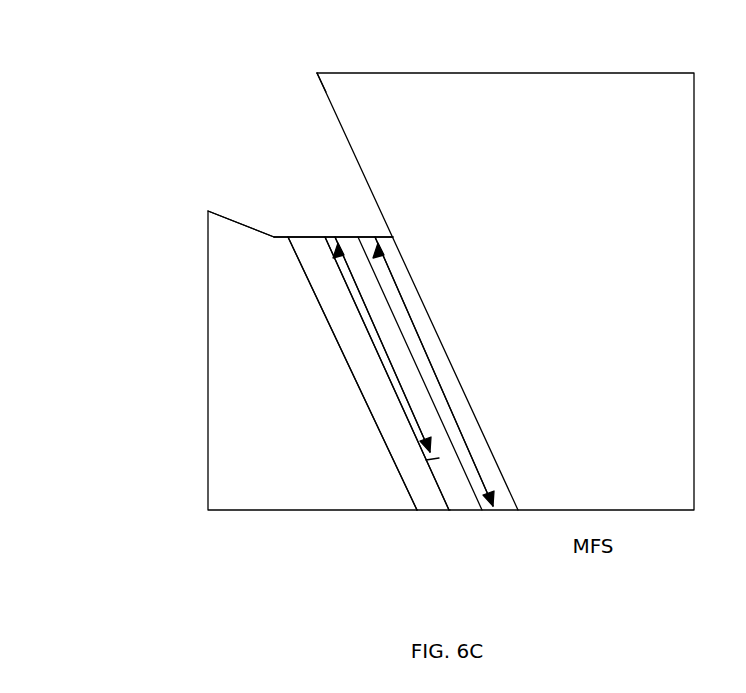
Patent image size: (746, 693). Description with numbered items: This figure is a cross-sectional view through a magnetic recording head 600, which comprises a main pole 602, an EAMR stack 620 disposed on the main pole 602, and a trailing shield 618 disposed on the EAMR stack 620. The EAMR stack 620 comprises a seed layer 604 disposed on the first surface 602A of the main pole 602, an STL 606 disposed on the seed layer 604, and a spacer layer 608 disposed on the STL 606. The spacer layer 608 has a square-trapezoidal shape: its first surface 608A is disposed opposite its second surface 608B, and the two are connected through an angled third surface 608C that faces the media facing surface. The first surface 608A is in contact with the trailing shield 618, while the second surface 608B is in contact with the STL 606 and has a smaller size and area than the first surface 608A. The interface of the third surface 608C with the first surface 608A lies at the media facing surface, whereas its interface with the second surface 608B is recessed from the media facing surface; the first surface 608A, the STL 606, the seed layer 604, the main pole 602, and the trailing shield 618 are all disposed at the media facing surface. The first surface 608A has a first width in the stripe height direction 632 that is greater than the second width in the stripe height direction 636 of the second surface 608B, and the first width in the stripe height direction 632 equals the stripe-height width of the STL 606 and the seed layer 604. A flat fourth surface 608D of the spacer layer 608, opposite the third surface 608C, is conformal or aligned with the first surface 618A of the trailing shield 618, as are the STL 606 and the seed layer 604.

The magnetic recording head 600 is at (122, 130).
The main pole 602 is at (564, 144).
The first surface of the main pole 602A is at (325, 91).
The seed layer 604 is at (405, 293).
The STL 606 is at (352, 257).
The spacer layer 608 is at (312, 270).
The first surface of the spacer layer 608A is at (332, 330).
The second surface of the spacer layer 608B is at (383, 373).
The third surface of the spacer layer 608C is at (425, 484).
The fourth surface of the spacer layer 608D is at (302, 237).
The trailing shield 618 is at (237, 488).
The first surface of the trailing shield 618A is at (281, 236).
The EAMR stack 620 is at (508, 331).
The first width in the stripe height direction 632 is at (465, 432).
The second width in the stripe height direction 636 is at (408, 402).